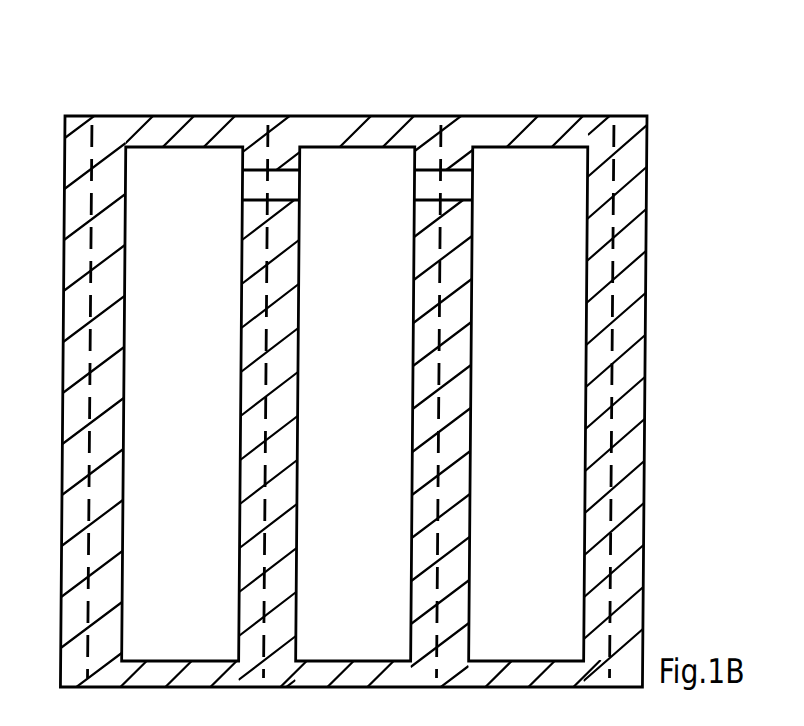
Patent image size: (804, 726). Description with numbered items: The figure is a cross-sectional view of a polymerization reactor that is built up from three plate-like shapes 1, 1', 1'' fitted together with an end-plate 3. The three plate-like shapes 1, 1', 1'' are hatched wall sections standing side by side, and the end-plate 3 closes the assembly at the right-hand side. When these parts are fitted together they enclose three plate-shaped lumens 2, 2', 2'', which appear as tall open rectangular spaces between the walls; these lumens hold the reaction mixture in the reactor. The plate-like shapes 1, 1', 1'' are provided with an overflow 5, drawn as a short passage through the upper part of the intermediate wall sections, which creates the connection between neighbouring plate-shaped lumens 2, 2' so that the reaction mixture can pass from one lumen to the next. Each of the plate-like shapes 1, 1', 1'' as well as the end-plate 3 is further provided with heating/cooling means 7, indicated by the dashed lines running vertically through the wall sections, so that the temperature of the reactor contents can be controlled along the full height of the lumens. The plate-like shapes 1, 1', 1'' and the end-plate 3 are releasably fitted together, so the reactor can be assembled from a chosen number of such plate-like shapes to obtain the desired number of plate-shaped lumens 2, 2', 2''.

The plate-like shape 1 is at (151, 363).
The plate-like shape 1' is at (326, 376).
The plate-like shape 1'' is at (507, 369).
The plate-shaped lumen 2 is at (183, 344).
The plate-shaped lumen 2' is at (356, 344).
The plate-shaped lumen 2'' is at (529, 344).
The end-plate 3 is at (602, 138).
The overflow 5 is at (280, 183).
The heating/cooling means 7 is at (92, 142).